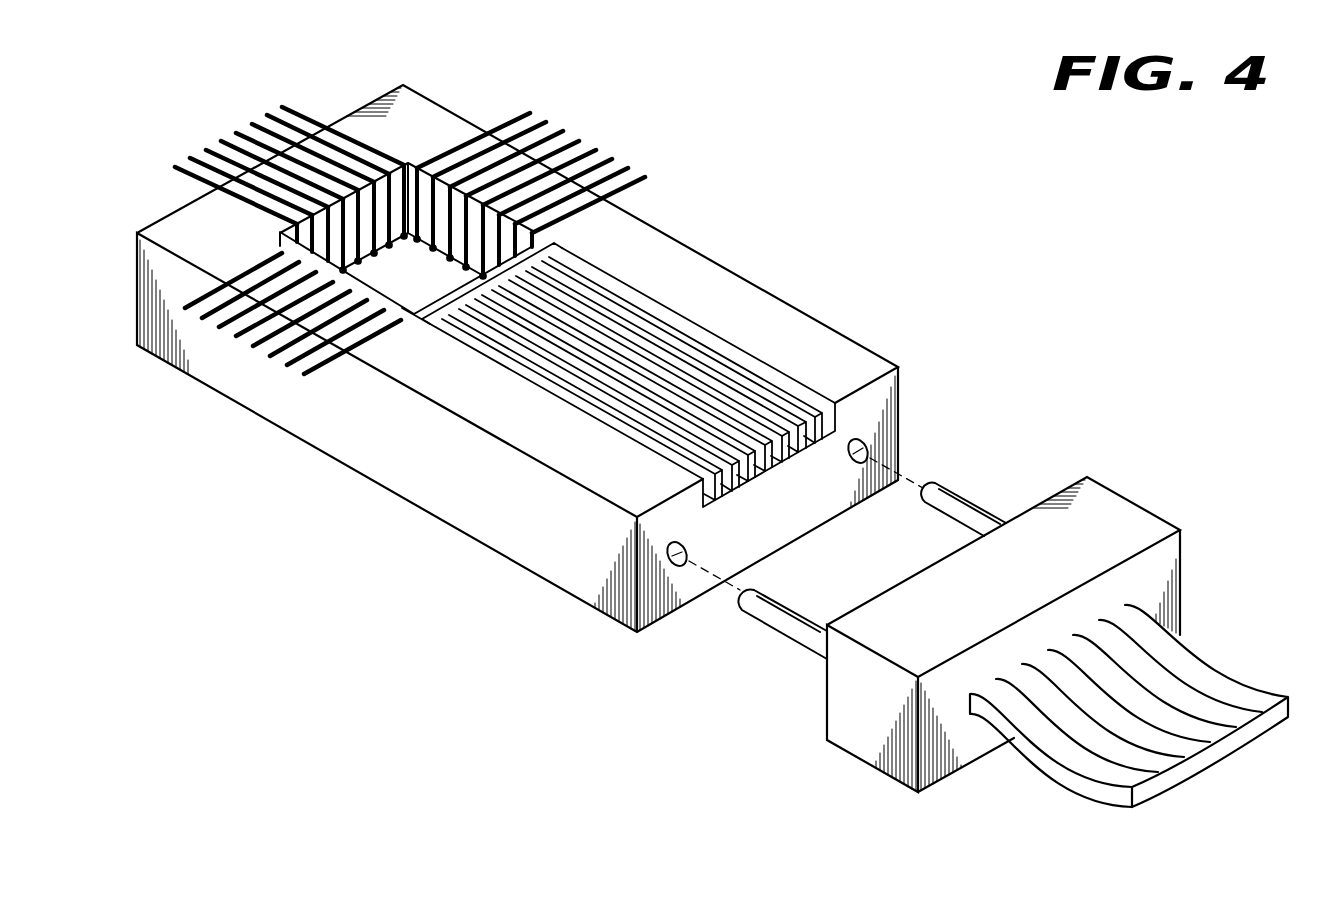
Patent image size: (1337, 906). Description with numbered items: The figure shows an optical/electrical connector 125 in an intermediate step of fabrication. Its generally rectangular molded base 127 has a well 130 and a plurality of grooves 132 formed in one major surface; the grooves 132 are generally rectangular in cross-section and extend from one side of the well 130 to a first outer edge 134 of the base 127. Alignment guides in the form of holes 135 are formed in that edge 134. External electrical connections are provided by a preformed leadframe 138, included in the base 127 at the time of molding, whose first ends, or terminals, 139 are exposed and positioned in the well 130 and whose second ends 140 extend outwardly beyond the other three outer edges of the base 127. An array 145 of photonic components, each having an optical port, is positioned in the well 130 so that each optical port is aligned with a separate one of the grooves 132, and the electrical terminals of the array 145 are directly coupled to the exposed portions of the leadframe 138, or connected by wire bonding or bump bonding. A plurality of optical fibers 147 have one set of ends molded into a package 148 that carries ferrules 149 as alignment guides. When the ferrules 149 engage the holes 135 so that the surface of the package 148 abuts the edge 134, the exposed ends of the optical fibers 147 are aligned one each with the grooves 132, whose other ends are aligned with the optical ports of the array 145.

The optical/electrical connector 125 is at (712, 432).
The base 127 is at (713, 280).
The well 130 is at (418, 177).
The grooves 132 is at (742, 485).
The first outer edge 134 is at (898, 414).
The holes 135 is at (869, 456).
The preformed leadframe 138 is at (358, 335).
The first ends 139 is at (352, 263).
The second ends 140 is at (213, 153).
The array of photonic components 145 is at (438, 328).
The optical fibers 147 is at (1199, 674).
The package 148 is at (1132, 505).
The ferrules 149 is at (790, 603).